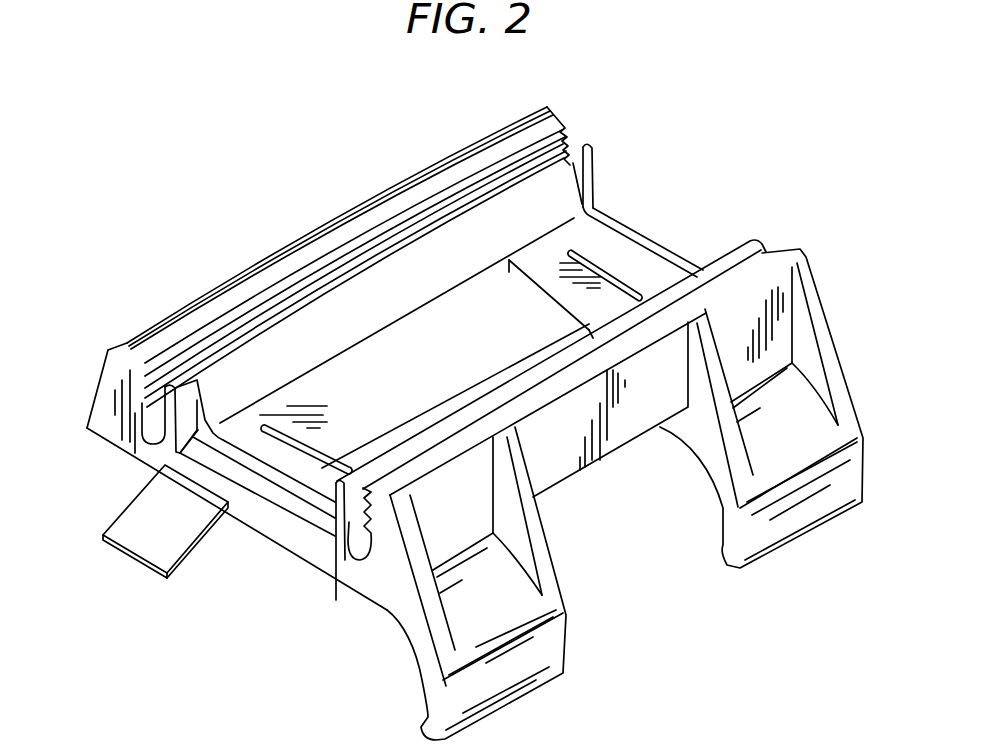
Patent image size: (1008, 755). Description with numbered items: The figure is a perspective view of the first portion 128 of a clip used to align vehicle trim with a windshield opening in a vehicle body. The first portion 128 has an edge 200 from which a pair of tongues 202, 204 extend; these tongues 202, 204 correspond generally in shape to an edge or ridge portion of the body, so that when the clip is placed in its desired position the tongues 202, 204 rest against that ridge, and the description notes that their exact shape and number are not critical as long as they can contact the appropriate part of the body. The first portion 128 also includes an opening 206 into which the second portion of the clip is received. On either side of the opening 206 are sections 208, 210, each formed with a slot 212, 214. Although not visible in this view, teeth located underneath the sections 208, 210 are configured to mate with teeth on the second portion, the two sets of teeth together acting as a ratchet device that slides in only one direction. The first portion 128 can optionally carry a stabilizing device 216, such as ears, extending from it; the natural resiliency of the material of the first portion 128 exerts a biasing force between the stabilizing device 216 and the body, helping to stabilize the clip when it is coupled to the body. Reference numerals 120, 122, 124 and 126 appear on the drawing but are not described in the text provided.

The end cap 120 is at (143, 387).
The clip 122 is at (348, 566).
The ridged rail 124 is at (172, 322).
The front rail 126 is at (770, 252).
The first portion 128 is at (776, 84).
The edge 200 is at (604, 456).
The tongue 202 is at (556, 648).
The tongue 204 is at (850, 481).
The opening 206 is at (432, 352).
The section 208 is at (330, 403).
The section 210 is at (550, 284).
The slot 212 is at (338, 457).
The slot 214 is at (600, 268).
The stabilizing device 216 is at (144, 548).